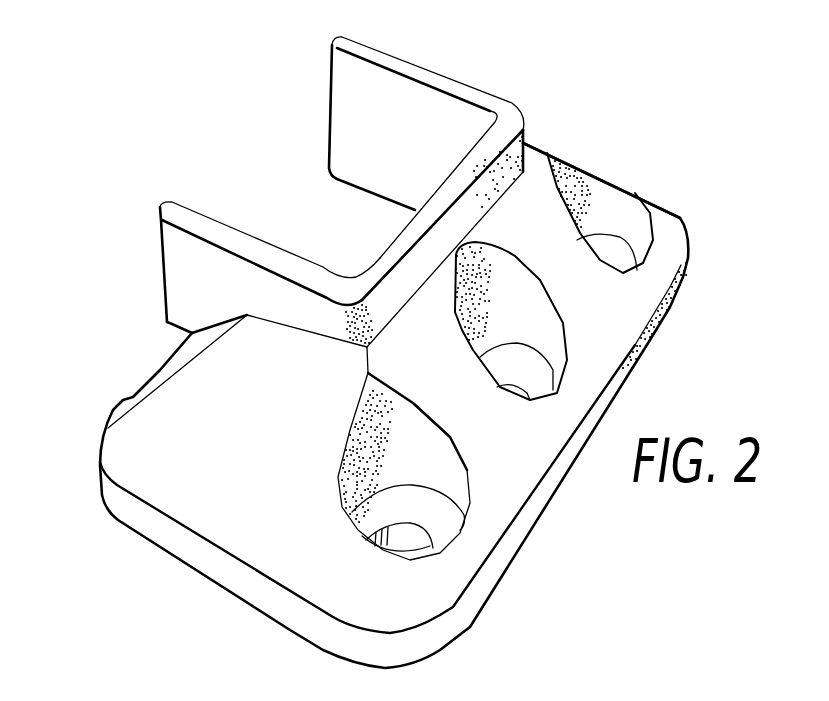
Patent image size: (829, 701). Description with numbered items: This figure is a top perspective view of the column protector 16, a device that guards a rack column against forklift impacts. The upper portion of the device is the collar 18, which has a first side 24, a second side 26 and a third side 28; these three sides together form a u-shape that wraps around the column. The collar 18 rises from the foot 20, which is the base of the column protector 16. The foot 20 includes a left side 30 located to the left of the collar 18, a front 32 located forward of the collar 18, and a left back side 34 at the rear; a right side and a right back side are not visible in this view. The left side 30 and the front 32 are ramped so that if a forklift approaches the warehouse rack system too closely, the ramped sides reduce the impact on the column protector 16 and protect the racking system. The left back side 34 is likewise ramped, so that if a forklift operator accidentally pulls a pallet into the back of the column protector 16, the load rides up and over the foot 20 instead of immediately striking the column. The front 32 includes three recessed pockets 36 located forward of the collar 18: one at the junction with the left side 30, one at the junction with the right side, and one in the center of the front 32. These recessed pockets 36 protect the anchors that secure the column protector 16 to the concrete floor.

The column protector 16 is at (341, 201).
The collar 18 is at (518, 102).
The foot 20 is at (369, 405).
The first side 24 is at (170, 247).
The second side 26 is at (405, 245).
The third side 28 is at (342, 87).
The left side 30 is at (188, 494).
The front 32 is at (510, 443).
The left back side 34 is at (186, 349).
The recessed pockets 36 is at (613, 210).